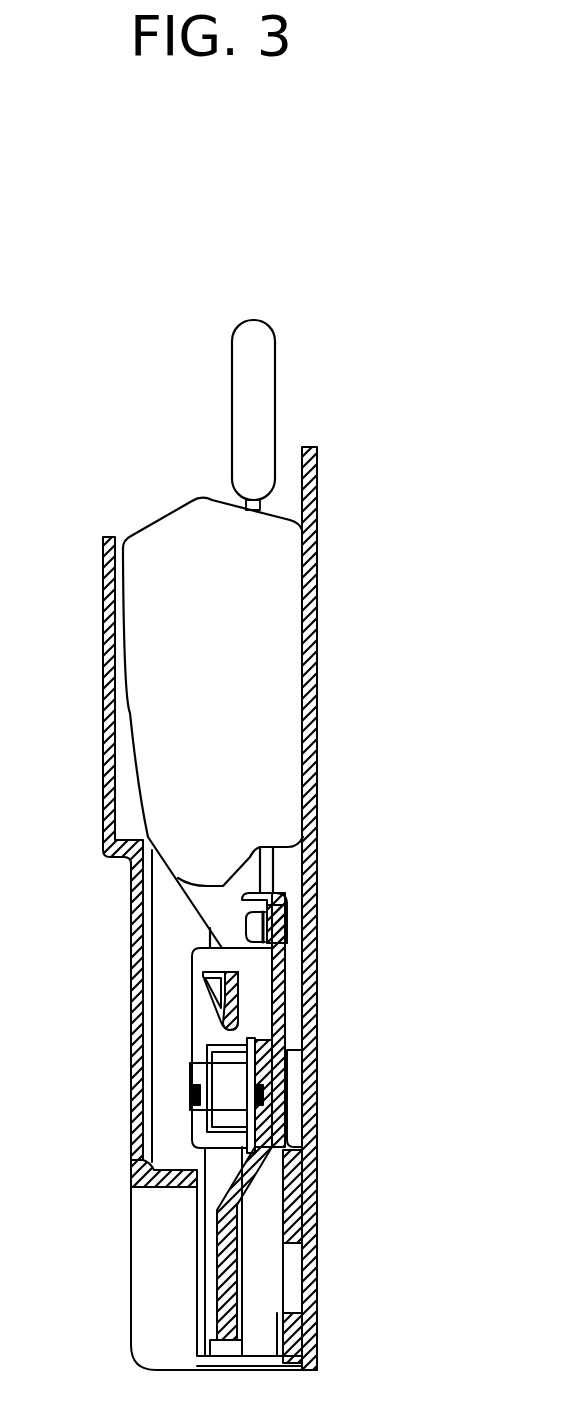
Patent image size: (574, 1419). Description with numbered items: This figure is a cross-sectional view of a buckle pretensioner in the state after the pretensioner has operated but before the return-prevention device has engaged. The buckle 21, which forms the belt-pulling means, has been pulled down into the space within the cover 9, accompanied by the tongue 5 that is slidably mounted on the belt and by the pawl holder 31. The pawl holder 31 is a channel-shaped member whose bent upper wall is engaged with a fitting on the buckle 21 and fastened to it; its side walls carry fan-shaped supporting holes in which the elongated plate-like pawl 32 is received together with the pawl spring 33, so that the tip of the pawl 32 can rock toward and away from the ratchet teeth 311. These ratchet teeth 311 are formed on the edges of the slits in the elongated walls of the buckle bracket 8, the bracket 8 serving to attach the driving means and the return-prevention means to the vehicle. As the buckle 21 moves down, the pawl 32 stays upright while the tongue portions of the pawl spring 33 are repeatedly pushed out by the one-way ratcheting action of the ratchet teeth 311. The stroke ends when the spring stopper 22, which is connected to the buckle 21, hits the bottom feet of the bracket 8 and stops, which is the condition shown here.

The tongue 5 is at (257, 398).
The cover 9 is at (317, 642).
The buckle 21 is at (153, 725).
The spring stopper 22 is at (230, 1288).
The pawl holder 31 is at (285, 1003).
The pawl 32 is at (228, 1005).
The pawl spring 33 is at (238, 1002).
The ratchet teeth 311 is at (210, 979).
The buckle bracket 8 is at (303, 1193).